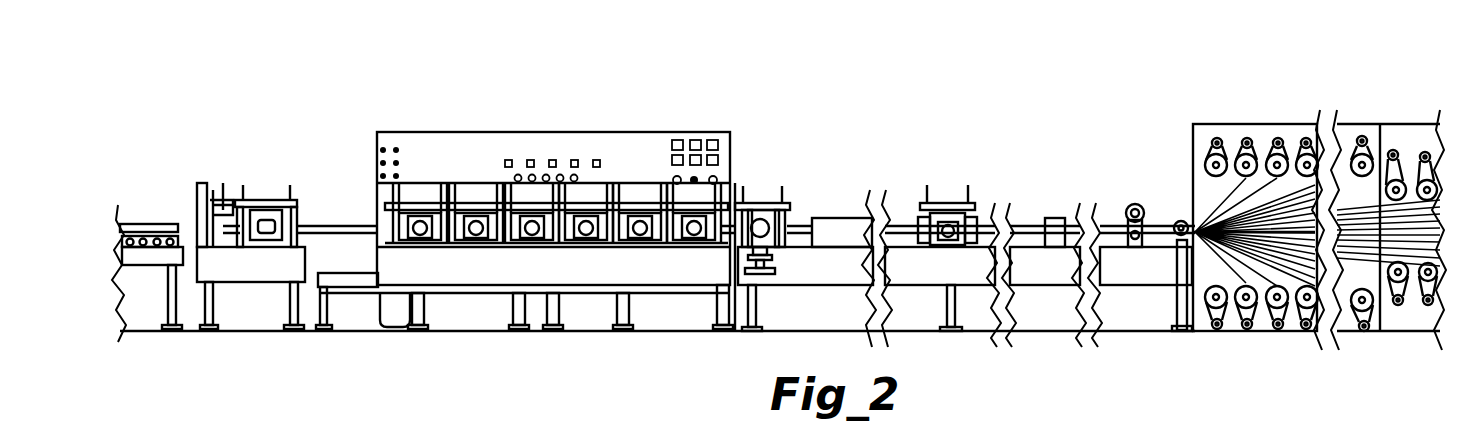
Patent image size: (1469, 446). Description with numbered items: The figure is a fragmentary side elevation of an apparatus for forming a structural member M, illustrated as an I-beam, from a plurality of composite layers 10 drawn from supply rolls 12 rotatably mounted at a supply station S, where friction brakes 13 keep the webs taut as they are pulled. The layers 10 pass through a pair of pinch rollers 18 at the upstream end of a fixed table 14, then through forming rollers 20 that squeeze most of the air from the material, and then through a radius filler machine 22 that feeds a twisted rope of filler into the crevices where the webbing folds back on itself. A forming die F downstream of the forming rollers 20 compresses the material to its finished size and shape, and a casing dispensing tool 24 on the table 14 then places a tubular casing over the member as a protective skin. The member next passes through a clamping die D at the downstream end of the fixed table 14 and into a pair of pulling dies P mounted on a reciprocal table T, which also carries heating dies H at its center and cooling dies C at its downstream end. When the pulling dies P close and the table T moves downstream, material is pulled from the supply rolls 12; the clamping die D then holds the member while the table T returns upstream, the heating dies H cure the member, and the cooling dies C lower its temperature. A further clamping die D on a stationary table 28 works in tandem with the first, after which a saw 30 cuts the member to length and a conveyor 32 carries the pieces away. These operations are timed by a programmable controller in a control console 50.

The composite layers 10 is at (1203, 197).
The supply rolls 12 is at (1225, 180).
The friction brakes 13 is at (1315, 150).
The table 14 is at (797, 273).
The pinch rollers 18 is at (1178, 245).
The forming rollers 20 is at (1128, 218).
The radius filler machine 22 is at (1050, 227).
The casing dispensing tool 24 is at (838, 228).
The stationary table 28 is at (250, 268).
The saw 30 is at (212, 200).
The conveyor 32 is at (142, 252).
The control console 50 is at (467, 132).
The cooling dies C is at (473, 254).
The clamping die D is at (265, 185).
The forming die F is at (948, 195).
The heating dies H is at (582, 257).
The structural member M is at (152, 200).
The pulling dies P is at (683, 259).
The supply station S is at (1275, 108).
The reciprocal table T is at (367, 258).